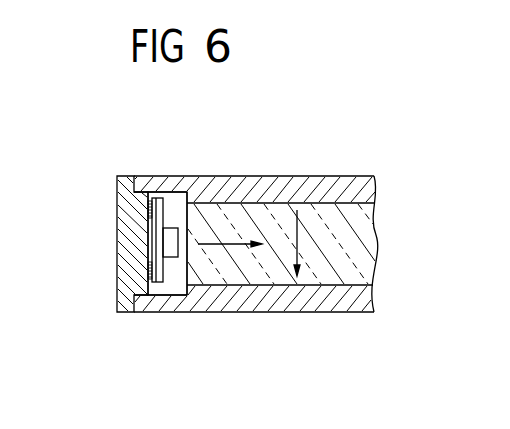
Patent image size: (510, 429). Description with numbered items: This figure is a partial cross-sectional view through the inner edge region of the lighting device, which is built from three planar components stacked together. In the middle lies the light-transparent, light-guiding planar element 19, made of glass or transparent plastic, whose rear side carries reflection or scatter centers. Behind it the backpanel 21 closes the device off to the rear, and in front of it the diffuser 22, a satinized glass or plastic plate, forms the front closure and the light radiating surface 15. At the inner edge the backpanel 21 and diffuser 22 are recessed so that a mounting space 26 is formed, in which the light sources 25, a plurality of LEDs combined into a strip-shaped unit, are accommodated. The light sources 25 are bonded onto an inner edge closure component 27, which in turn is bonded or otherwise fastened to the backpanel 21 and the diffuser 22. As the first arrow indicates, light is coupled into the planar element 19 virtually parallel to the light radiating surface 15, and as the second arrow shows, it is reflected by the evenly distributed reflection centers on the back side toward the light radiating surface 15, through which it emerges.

The light radiating surface 15 is at (205, 245).
The light-transparent light-guiding planar element 19 is at (352, 285).
The backpanel 21 is at (270, 303).
The diffuser 22 is at (265, 192).
The light sources 25 is at (160, 265).
The mounting space 26 is at (178, 203).
The inner edge closure component 27 is at (130, 233).